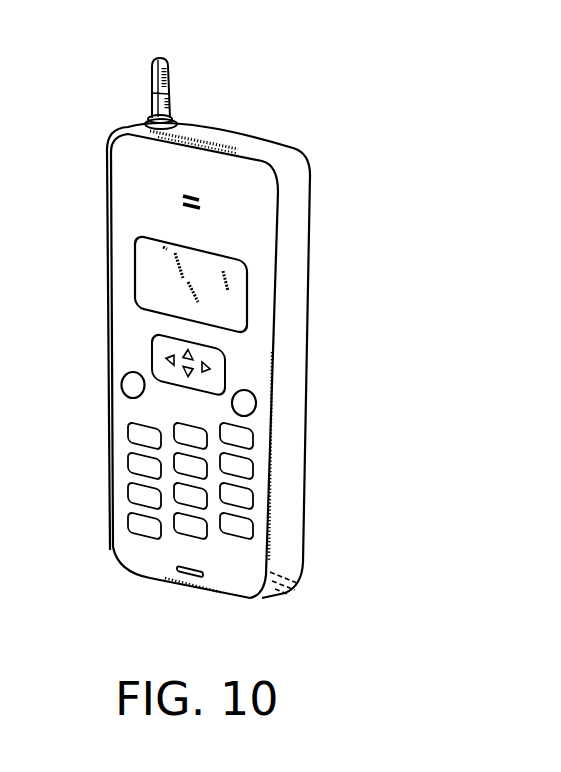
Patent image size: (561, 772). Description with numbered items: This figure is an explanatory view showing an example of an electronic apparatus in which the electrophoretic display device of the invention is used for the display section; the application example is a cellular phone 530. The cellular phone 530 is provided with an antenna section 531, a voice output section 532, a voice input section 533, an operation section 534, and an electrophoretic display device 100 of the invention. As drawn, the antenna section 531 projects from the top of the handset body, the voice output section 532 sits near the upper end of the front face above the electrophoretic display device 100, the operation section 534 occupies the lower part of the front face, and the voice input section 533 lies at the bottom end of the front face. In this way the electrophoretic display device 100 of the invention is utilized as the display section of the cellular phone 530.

The cellular phone 530 is at (361, 173).
The antenna section 531 is at (168, 67).
The voice output section 532 is at (197, 196).
The voice input section 533 is at (189, 576).
The operation section 534 is at (100, 322).
The electrophoretic display device 100 is at (237, 302).